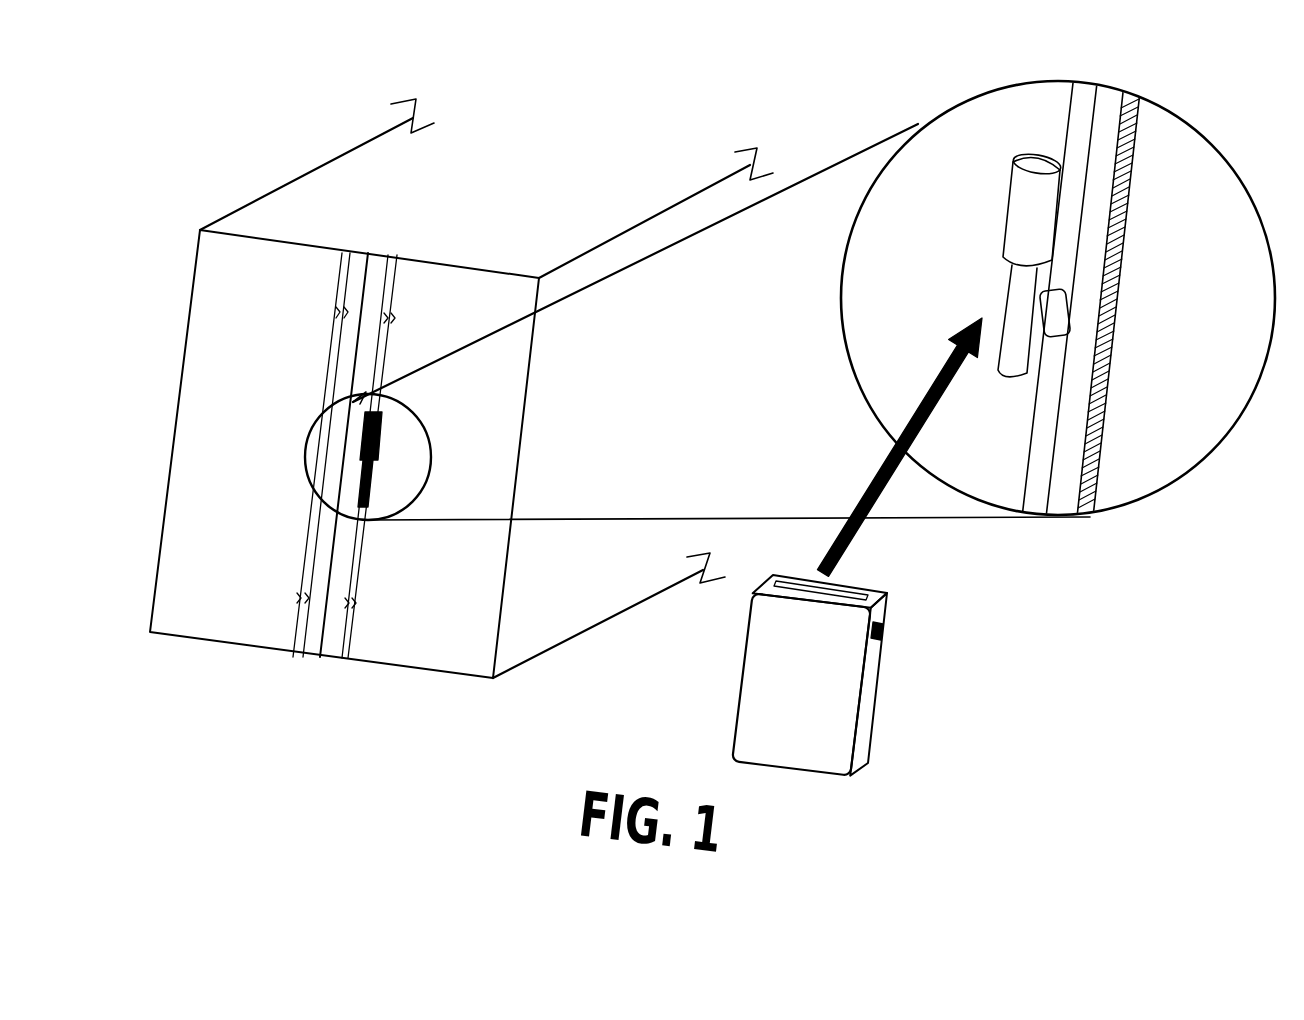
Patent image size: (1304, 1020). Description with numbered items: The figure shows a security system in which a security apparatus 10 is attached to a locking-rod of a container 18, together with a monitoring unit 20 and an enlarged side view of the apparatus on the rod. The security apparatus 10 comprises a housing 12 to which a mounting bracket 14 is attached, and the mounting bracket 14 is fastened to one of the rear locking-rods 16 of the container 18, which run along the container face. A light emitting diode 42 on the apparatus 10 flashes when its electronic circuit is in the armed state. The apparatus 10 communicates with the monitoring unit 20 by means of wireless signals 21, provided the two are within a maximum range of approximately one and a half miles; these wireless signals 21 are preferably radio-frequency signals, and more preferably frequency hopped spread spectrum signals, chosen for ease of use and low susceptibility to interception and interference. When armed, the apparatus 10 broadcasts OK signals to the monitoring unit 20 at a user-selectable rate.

The security apparatus 10 is at (386, 443).
The housing 12 is at (1012, 222).
The mounting bracket 14 is at (1052, 318).
The rear locking-rods 16 is at (292, 657).
The container 18 is at (323, 162).
The monitoring unit 20 is at (824, 680).
The wireless signals 21 is at (888, 483).
The light emitting diode 42 is at (1010, 196).